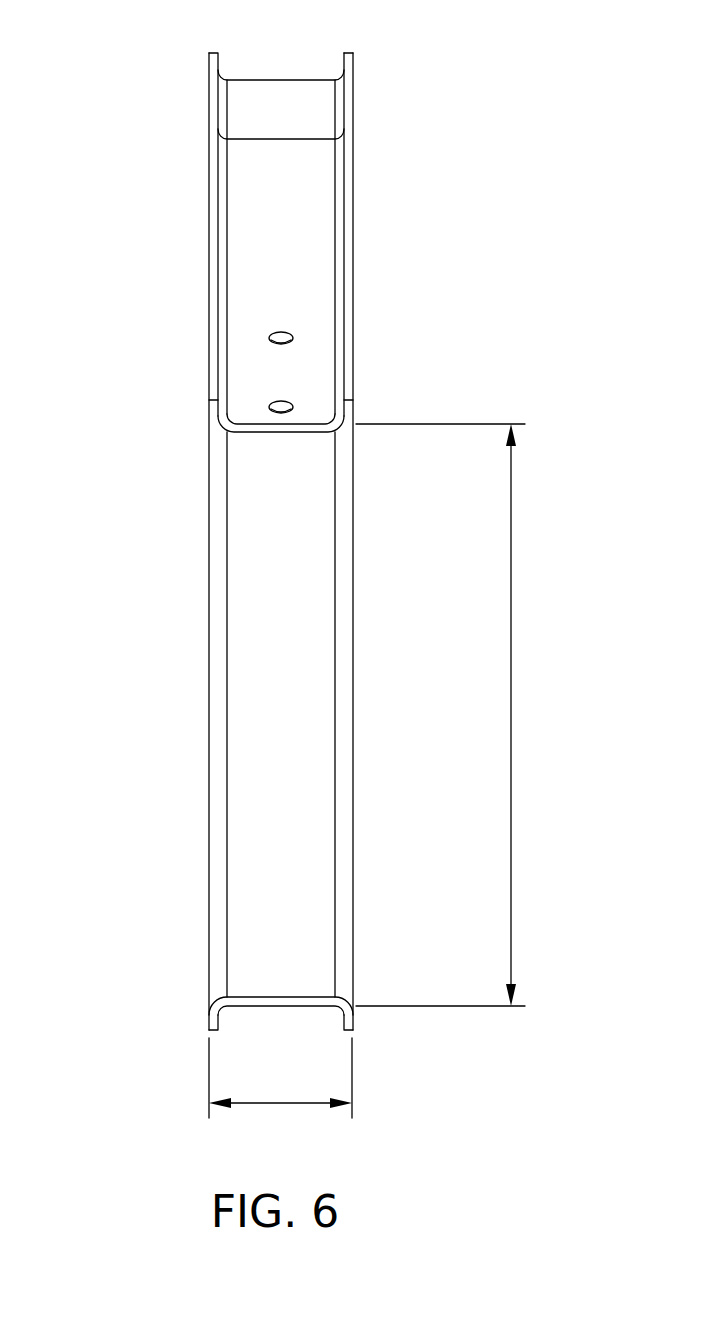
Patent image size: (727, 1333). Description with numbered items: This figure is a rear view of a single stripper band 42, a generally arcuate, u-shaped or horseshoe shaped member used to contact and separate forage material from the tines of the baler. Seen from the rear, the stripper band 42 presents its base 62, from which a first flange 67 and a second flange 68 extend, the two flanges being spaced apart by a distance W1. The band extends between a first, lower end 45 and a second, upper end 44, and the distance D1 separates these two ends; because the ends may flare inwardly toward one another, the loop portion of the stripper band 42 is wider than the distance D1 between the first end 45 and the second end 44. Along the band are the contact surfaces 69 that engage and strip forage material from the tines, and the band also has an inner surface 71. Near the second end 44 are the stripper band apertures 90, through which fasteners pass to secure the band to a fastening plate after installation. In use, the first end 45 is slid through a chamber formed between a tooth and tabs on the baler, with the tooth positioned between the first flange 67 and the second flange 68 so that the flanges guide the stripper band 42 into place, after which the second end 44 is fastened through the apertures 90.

The stripper band 42 is at (138, 520).
The second end 44 is at (298, 433).
The first end 45 is at (306, 997).
The base 62 is at (285, 822).
The first flange 67 is at (208, 1017).
The second flange 68 is at (354, 1018).
The contact surfaces 69 is at (211, 52).
The inner surface 71 is at (263, 597).
The stripper band apertures 90 is at (278, 329).
The distance D1 is at (511, 678).
The distance W1 is at (283, 1105).